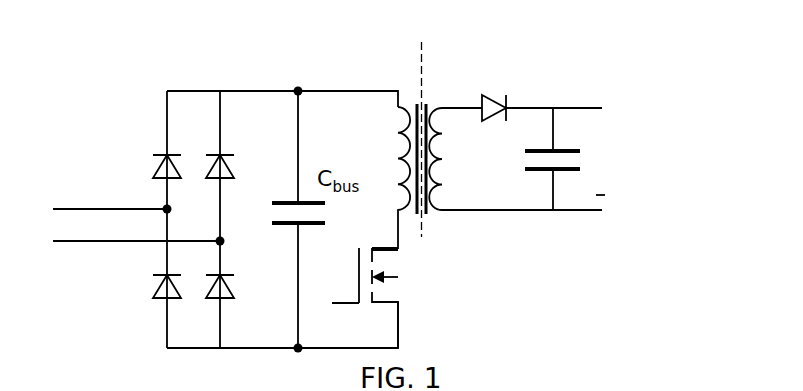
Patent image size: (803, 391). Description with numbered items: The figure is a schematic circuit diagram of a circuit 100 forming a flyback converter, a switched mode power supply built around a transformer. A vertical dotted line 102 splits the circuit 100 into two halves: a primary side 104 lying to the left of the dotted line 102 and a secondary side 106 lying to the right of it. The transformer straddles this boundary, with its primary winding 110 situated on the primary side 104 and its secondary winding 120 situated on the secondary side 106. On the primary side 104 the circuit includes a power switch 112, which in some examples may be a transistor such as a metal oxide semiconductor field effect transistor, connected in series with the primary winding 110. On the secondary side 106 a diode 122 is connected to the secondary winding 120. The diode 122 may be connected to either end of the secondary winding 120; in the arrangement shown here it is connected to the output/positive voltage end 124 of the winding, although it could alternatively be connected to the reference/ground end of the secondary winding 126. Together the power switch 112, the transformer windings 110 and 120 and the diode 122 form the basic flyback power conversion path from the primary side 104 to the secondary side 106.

The circuit 100 is at (136, 103).
The dotted line 102 is at (420, 55).
The primary side 104 is at (257, 113).
The secondary side 106 is at (478, 198).
The primary winding 110 is at (398, 160).
The power switch 112 is at (398, 298).
The secondary winding 120 is at (433, 185).
The diode 122 is at (495, 100).
The output/positive voltage end 124 is at (443, 107).
The reference/ground end of the secondary winding 126 is at (443, 212).